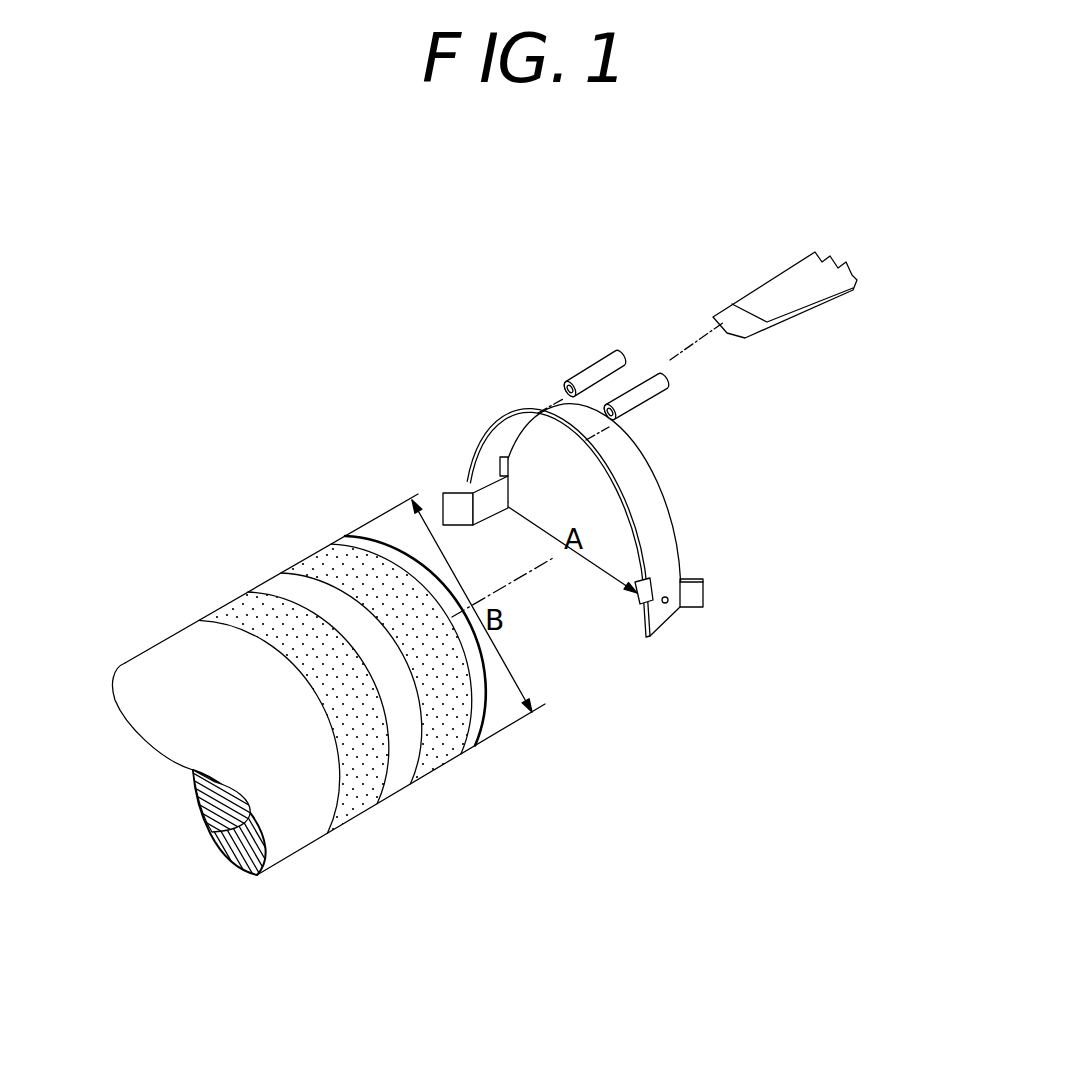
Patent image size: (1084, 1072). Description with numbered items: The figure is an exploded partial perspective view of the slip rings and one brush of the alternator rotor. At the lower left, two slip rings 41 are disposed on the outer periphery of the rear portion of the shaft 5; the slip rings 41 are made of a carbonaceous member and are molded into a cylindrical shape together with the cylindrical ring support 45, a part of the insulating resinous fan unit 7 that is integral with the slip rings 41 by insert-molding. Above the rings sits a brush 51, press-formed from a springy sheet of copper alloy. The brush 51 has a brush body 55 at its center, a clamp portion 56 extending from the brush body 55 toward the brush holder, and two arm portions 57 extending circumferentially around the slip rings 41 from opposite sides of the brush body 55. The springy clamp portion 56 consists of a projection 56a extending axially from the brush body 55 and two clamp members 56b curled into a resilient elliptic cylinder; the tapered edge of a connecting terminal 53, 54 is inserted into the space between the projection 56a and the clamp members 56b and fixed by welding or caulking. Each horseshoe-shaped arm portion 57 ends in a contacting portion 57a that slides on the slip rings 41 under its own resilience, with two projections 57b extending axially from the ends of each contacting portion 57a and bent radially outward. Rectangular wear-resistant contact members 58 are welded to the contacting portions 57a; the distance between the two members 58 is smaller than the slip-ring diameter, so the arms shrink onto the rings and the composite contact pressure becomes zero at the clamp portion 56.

The brush 51 is at (575, 469).
The brush body 55 is at (567, 412).
The clamp portion 56 is at (657, 346).
The projection 56a is at (633, 376).
The clamp member 56b is at (600, 370).
The arm portion 57 is at (571, 453).
The contacting portion 57a is at (665, 612).
The projection 57b is at (455, 495).
The wear-resistant contact member 58 is at (576, 554).
The slip ring 41 is at (445, 753).
The cylindrical ring support 45 is at (239, 843).
The fan unit 7 is at (263, 867).
The shaft 5 is at (227, 823).
The connecting terminal 53 is at (824, 304).
The connecting terminal 54 is at (790, 297).